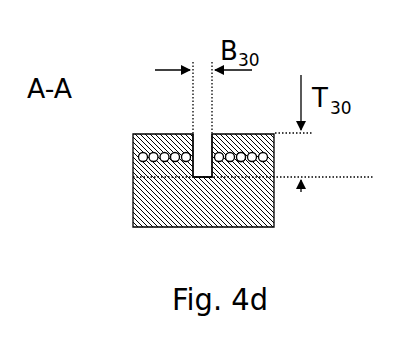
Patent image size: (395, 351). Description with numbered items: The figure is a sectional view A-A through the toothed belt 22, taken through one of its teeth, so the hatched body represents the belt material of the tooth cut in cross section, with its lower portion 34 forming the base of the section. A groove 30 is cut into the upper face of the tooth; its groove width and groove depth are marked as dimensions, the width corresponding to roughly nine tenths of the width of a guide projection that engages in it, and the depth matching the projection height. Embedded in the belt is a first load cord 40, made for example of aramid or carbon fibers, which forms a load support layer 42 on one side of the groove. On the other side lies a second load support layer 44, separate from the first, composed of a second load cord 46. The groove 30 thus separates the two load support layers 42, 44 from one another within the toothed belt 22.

The toothed belt 22 is at (112, 197).
The groove 30 is at (203, 126).
The base portion 34 is at (155, 215).
The first load cord 40 is at (139, 159).
The load support layer 42 is at (128, 157).
The second load support layer 44 is at (277, 157).
The second load cord 46 is at (245, 152).